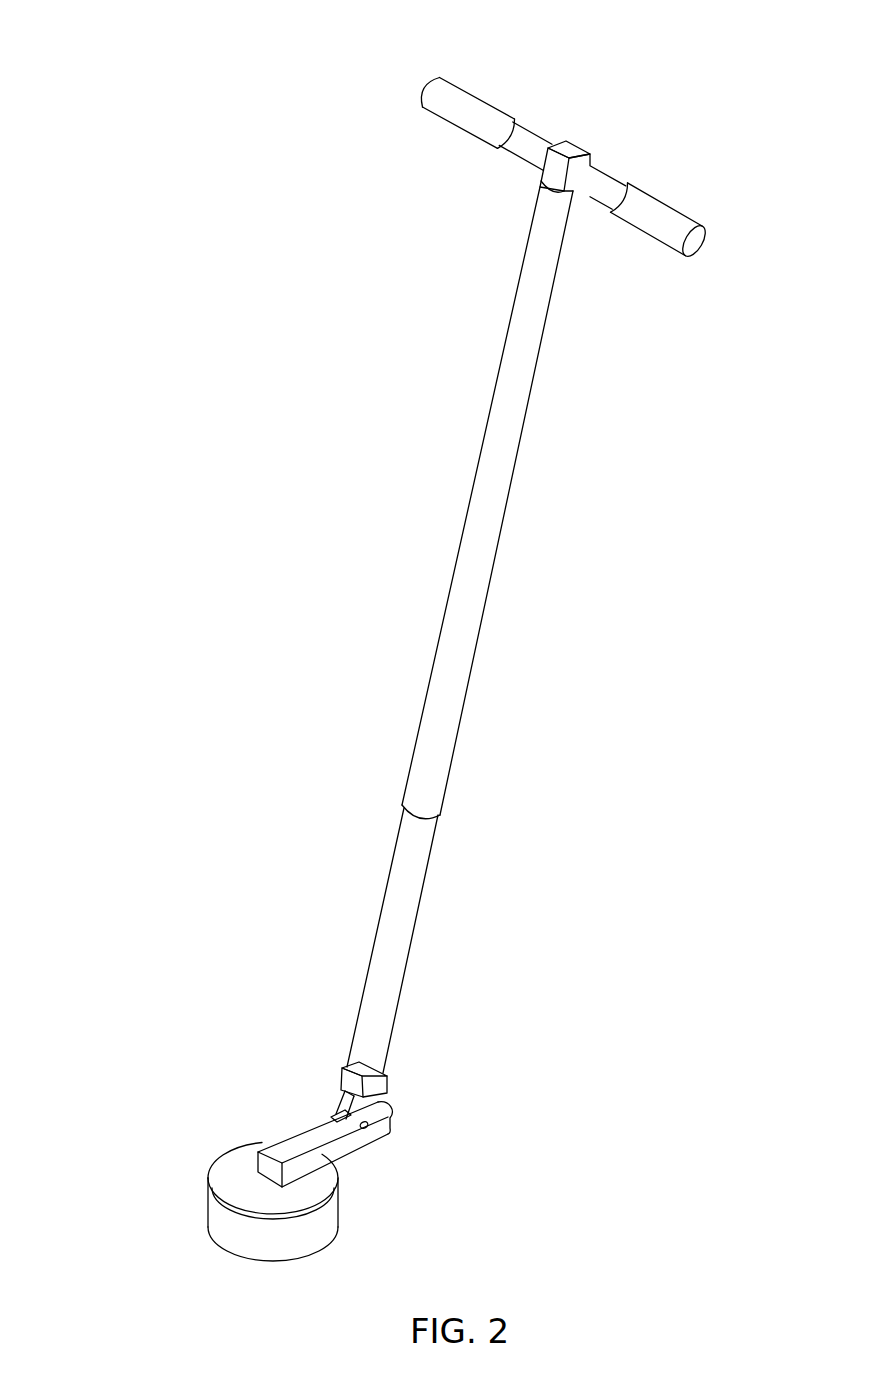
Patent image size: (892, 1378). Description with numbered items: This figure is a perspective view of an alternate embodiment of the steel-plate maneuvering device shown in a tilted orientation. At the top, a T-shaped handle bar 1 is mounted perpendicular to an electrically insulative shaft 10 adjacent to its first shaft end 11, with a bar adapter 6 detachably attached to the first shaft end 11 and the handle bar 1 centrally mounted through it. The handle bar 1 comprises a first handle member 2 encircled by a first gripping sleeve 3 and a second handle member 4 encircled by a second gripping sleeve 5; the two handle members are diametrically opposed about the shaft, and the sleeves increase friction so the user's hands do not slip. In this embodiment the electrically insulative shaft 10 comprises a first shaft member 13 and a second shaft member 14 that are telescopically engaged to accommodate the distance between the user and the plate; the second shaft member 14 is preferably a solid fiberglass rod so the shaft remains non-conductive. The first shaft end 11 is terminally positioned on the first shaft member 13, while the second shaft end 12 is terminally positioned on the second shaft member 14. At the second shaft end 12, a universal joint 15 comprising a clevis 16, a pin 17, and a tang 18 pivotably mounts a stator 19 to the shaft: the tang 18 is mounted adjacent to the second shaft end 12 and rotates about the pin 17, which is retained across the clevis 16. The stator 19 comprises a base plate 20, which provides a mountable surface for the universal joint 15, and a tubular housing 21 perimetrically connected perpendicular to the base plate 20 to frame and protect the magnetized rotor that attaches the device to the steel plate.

The handle bar 1 is at (575, 176).
The first handle member 2 is at (525, 143).
The first gripping sleeve 3 is at (476, 117).
The second handle member 4 is at (601, 184).
The second gripping sleeve 5 is at (666, 218).
The bar adapter 6 is at (533, 170).
The electrically insulative shaft 10 is at (476, 630).
The first shaft end 11 is at (585, 211).
The second shaft end 12 is at (395, 1061).
The first shaft member 13 is at (483, 549).
The second shaft member 14 is at (391, 943).
The universal joint 15 is at (320, 1086).
The clevis 16 is at (378, 1118).
The pin 17 is at (368, 1130).
The tang 18 is at (383, 1083).
The stator 19 is at (218, 1137).
The base plate 20 is at (237, 1172).
The tubular housing 21 is at (213, 1223).